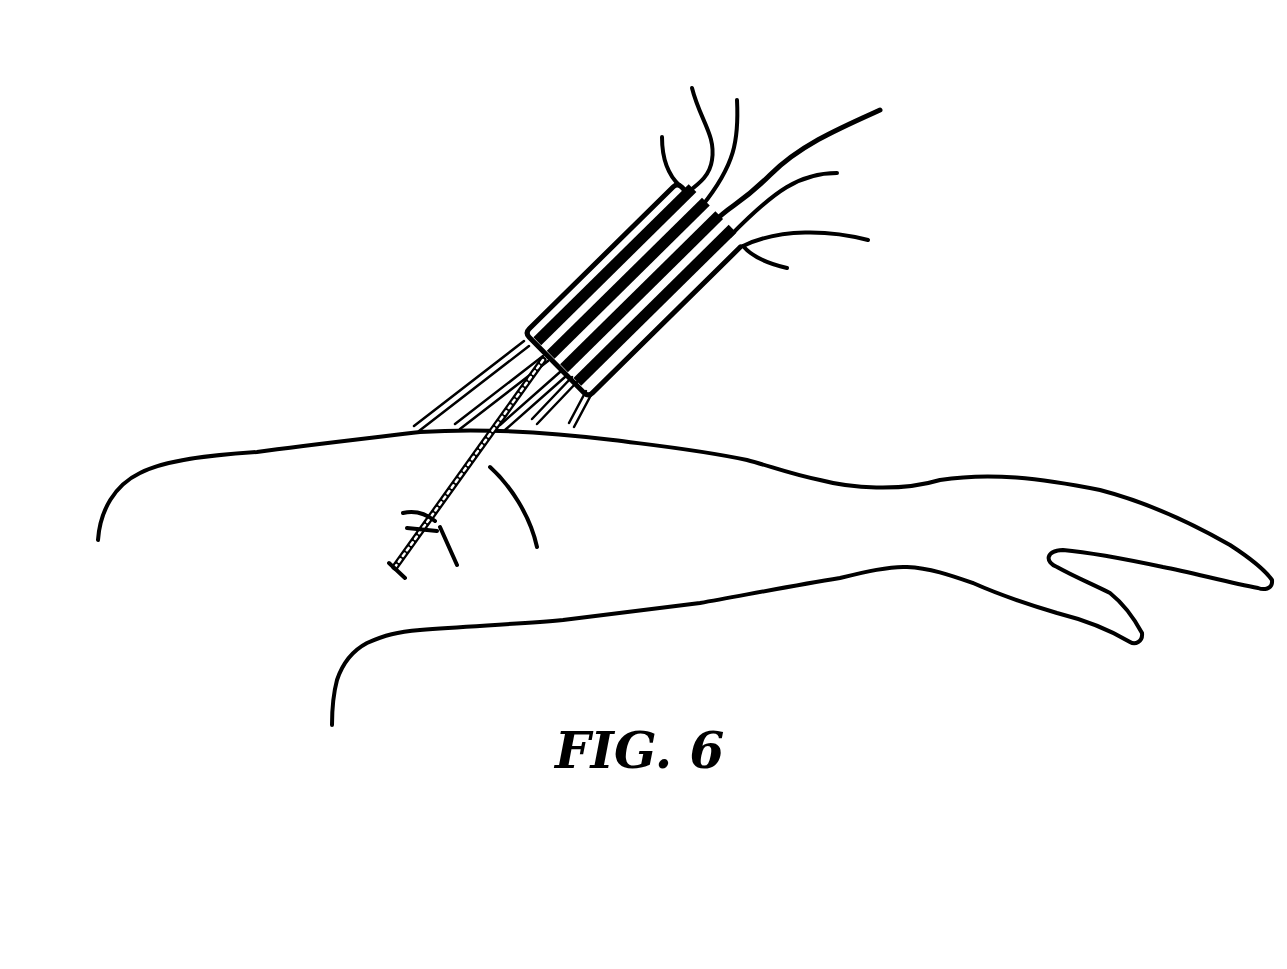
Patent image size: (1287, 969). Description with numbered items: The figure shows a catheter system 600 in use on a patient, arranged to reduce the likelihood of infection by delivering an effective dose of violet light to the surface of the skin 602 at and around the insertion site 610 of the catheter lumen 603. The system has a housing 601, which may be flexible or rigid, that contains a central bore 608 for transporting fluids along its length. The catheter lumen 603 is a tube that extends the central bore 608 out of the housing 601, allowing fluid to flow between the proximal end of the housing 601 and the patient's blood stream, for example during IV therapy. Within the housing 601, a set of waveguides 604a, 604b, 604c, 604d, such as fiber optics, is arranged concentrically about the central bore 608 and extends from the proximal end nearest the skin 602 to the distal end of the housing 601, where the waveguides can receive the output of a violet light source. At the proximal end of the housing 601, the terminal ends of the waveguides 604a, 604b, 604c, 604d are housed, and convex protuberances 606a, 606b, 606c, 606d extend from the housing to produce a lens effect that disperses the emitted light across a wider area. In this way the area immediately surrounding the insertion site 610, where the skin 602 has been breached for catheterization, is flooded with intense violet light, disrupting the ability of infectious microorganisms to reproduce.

The catheter system 600 is at (512, 237).
The housing 601 is at (697, 305).
The skin 602 is at (797, 507).
The catheter lumen 603 is at (418, 550).
The waveguide 604a is at (674, 121).
The waveguide 604b is at (752, 134).
The waveguide 604c is at (823, 196).
The waveguide 604d is at (847, 247).
The convex protuberance 606a is at (522, 345).
The convex protuberance 606b is at (492, 373).
The convex protuberance 606c is at (585, 420).
The convex protuberance 606d is at (583, 412).
The central bore 608 is at (831, 153).
The insertion site 610 is at (418, 525).